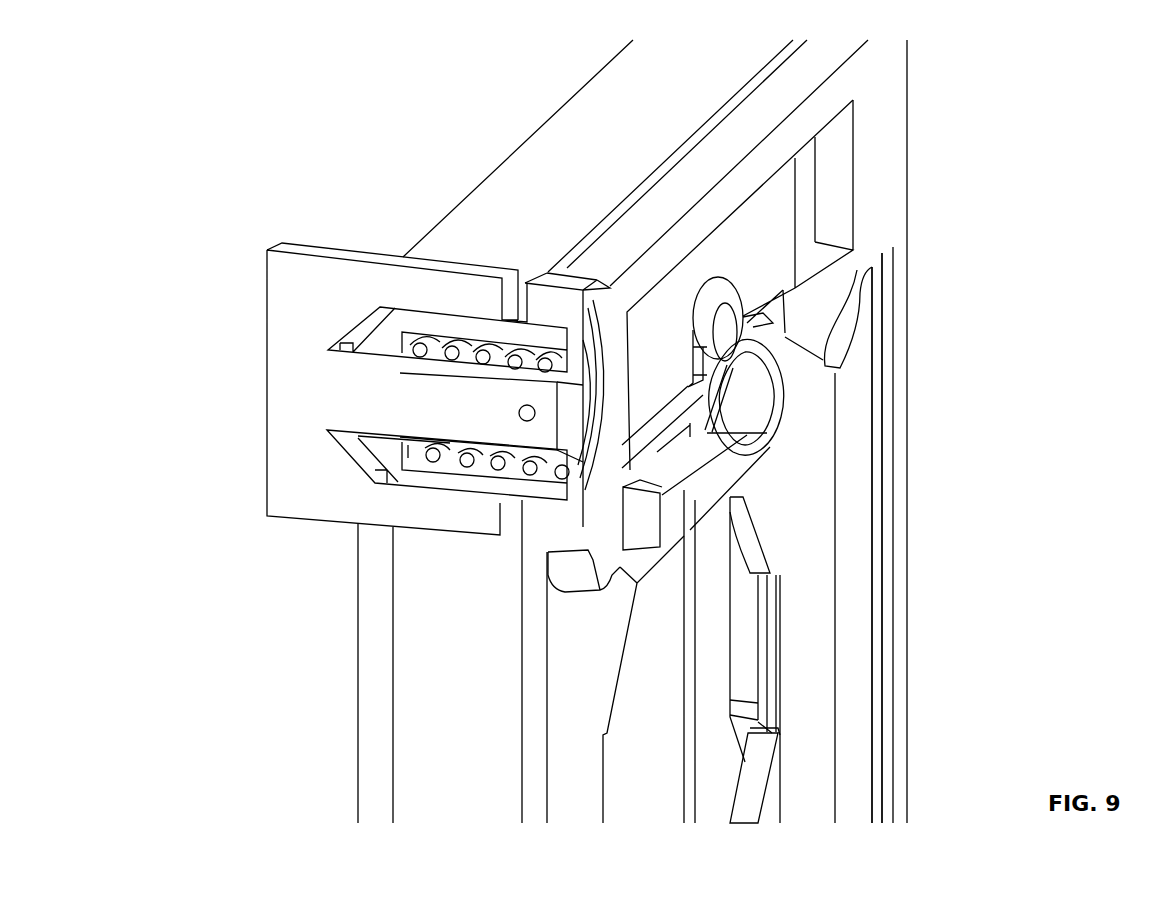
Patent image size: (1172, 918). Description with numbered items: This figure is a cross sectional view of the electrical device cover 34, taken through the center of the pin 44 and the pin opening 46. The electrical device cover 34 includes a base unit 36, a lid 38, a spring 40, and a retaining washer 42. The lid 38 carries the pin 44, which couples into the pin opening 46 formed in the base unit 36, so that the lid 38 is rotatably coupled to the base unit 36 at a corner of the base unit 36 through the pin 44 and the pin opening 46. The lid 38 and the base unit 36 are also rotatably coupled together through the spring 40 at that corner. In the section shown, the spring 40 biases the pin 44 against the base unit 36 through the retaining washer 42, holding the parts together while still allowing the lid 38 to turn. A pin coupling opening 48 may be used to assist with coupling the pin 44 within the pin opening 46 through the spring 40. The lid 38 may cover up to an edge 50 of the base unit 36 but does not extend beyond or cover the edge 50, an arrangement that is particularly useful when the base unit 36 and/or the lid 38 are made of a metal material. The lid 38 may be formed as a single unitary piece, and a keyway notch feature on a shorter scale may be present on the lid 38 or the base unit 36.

The electrical device cover 34 is at (655, 431).
The base unit 36 is at (888, 570).
The lid 38 is at (370, 582).
The spring 40 is at (467, 462).
The retaining washer 42 is at (560, 478).
The pin 44 is at (382, 402).
The pin opening 46 is at (537, 350).
The pin coupling opening 48 is at (520, 410).
The edge 50 is at (707, 160).